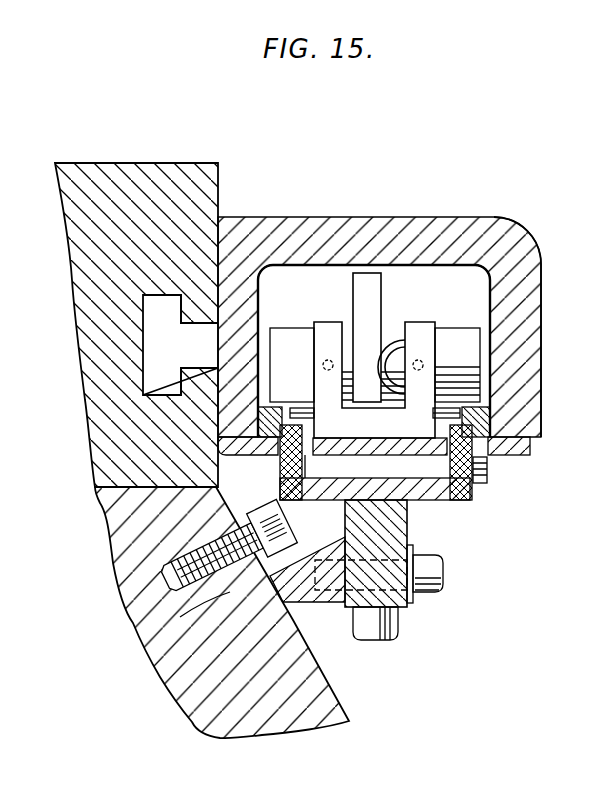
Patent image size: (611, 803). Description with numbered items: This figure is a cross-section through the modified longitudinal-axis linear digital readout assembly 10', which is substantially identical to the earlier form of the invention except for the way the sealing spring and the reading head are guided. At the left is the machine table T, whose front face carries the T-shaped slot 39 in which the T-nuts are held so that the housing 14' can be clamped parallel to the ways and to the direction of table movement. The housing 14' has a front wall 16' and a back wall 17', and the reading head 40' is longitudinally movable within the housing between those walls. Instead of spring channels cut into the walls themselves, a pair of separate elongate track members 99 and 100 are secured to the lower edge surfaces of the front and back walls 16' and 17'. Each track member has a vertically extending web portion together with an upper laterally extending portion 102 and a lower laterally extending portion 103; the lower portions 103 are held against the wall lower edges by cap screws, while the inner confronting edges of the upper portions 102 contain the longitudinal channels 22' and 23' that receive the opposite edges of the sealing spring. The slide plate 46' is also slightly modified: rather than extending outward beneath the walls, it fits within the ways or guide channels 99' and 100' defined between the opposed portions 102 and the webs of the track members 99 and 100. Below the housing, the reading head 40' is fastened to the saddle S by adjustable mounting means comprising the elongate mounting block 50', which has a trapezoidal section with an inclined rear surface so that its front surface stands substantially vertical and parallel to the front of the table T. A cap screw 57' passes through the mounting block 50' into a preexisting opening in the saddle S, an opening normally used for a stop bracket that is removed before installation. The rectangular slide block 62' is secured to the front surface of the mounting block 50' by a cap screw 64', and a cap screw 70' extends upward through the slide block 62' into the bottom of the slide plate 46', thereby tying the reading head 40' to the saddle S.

The table T is at (225, 181).
The saddle S is at (342, 687).
The linear digital readout assembly 10' is at (379, 291).
The housing 14' is at (536, 220).
The front wall 16' is at (562, 350).
The back wall 17' is at (379, 306).
The channel 22' is at (416, 358).
The channel 23' is at (358, 388).
The T-shaped slot 39 is at (146, 333).
The reading head 40' is at (527, 273).
The slide plate 46' is at (396, 495).
The mounting block 50' is at (317, 603).
The cap screw 57' is at (191, 573).
The slide block 62' is at (390, 553).
The cap screw 64' is at (448, 599).
The cap screw 70' is at (400, 645).
The track member 99 is at (512, 484).
The guide channel 99' is at (428, 462).
The track member 100 is at (244, 480).
The guide channel 100' is at (322, 462).
The upper laterally extending portion 102 is at (298, 422).
The lower laterally extending portion 103 is at (218, 448).